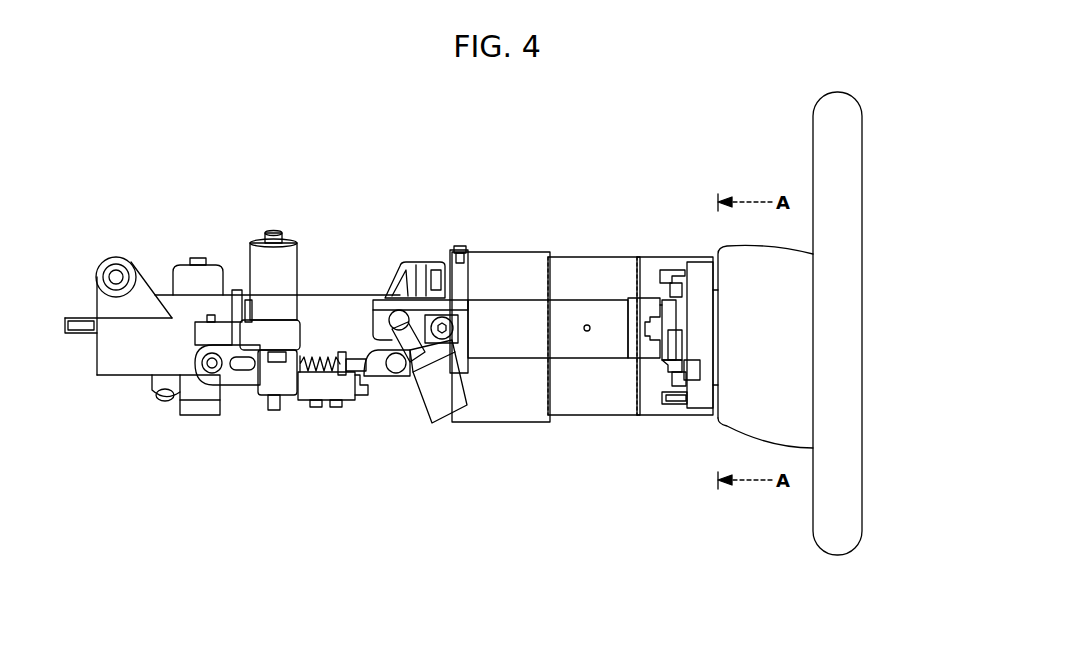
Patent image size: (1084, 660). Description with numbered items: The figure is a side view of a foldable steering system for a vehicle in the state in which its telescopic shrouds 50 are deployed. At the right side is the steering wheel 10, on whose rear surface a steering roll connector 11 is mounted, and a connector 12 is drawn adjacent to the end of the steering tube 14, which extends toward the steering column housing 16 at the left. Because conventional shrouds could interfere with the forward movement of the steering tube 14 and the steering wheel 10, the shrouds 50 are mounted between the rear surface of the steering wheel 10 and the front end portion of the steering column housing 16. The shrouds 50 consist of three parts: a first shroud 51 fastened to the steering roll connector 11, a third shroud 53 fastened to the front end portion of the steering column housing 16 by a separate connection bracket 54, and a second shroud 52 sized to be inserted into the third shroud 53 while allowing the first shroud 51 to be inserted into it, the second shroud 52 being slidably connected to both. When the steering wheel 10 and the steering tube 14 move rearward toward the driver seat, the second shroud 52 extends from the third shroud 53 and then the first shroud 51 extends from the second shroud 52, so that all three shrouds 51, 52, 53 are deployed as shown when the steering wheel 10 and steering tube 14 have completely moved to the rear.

The steering wheel 10 is at (846, 325).
The steering roll connector 11 is at (700, 252).
The connector 12 is at (667, 340).
The steering tube 14 is at (593, 350).
The steering column housing 16 is at (338, 280).
The shrouds 50 is at (582, 289).
The first shroud 51 is at (675, 302).
The second shroud 52 is at (597, 256).
The third shroud 53 is at (526, 252).
The connection bracket 54 is at (468, 250).